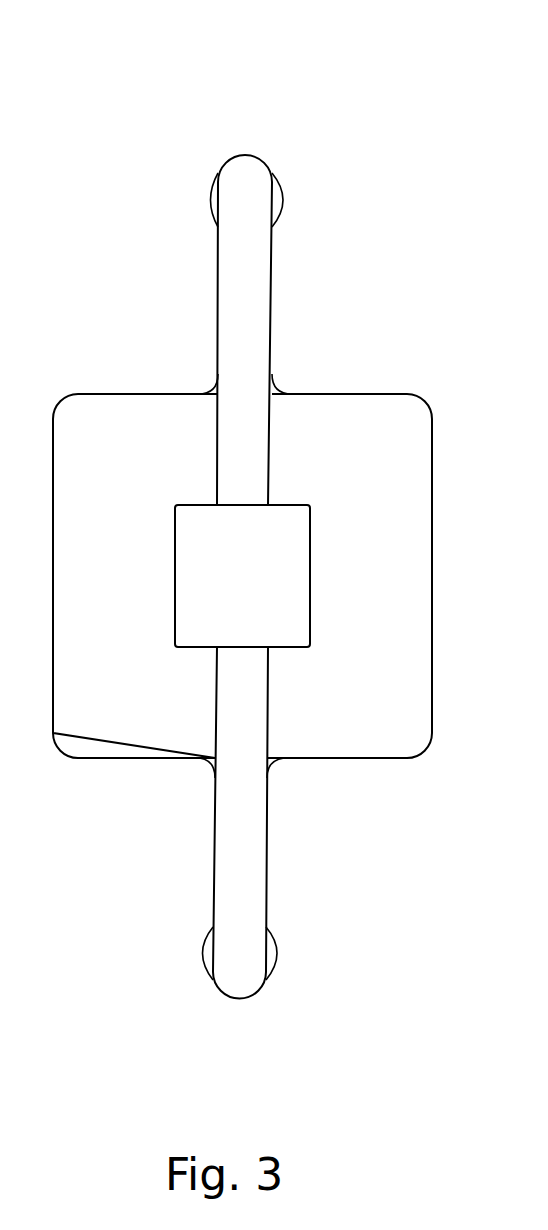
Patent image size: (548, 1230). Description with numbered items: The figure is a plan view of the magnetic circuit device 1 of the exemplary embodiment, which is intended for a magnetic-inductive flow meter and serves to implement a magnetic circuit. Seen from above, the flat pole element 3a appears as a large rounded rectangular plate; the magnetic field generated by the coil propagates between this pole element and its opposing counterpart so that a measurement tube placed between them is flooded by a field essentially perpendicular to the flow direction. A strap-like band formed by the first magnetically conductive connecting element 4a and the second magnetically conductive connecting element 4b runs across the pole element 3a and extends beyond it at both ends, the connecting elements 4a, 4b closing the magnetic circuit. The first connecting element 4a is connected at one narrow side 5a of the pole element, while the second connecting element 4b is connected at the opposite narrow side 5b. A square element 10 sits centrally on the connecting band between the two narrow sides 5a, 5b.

The magnetic circuit device 1 is at (264, 505).
The flat pole element 3a is at (240, 541).
The first magnetically conductive connecting element 4a is at (258, 258).
The second magnetically conductive connecting element 4b is at (250, 913).
The narrow side 5a is at (102, 375).
The opposite narrow side 5b is at (104, 776).
The sensor unit 10 is at (225, 583).